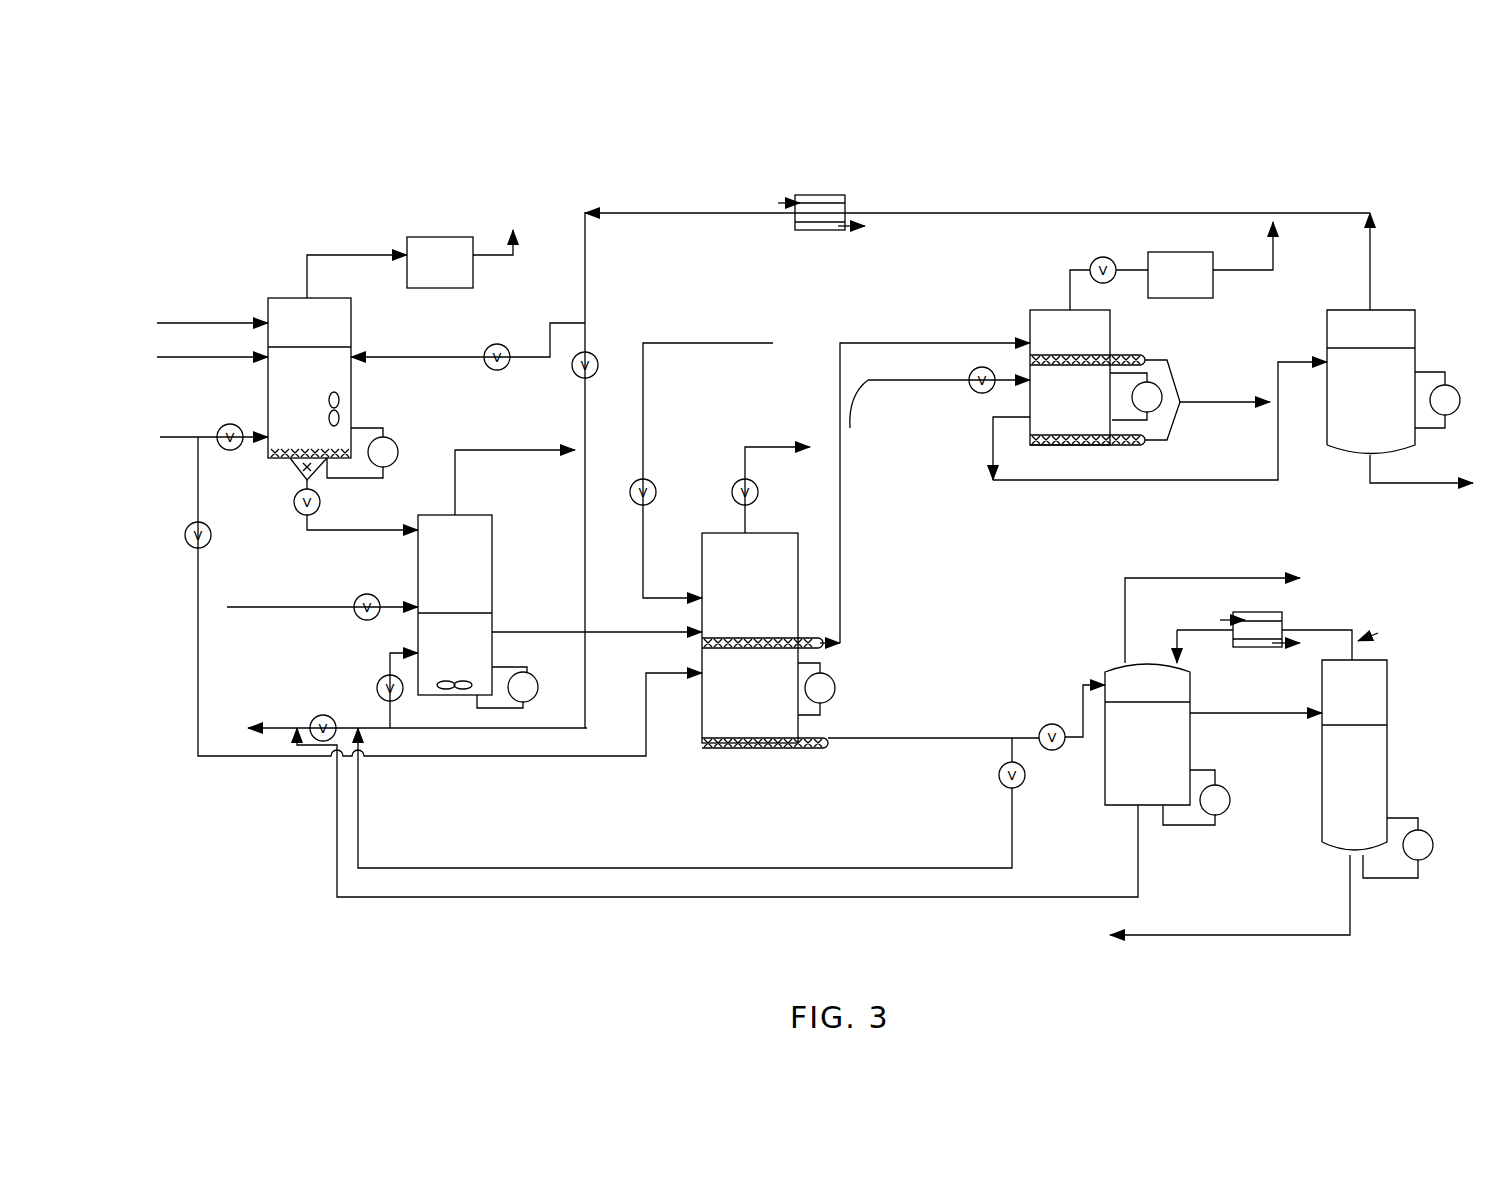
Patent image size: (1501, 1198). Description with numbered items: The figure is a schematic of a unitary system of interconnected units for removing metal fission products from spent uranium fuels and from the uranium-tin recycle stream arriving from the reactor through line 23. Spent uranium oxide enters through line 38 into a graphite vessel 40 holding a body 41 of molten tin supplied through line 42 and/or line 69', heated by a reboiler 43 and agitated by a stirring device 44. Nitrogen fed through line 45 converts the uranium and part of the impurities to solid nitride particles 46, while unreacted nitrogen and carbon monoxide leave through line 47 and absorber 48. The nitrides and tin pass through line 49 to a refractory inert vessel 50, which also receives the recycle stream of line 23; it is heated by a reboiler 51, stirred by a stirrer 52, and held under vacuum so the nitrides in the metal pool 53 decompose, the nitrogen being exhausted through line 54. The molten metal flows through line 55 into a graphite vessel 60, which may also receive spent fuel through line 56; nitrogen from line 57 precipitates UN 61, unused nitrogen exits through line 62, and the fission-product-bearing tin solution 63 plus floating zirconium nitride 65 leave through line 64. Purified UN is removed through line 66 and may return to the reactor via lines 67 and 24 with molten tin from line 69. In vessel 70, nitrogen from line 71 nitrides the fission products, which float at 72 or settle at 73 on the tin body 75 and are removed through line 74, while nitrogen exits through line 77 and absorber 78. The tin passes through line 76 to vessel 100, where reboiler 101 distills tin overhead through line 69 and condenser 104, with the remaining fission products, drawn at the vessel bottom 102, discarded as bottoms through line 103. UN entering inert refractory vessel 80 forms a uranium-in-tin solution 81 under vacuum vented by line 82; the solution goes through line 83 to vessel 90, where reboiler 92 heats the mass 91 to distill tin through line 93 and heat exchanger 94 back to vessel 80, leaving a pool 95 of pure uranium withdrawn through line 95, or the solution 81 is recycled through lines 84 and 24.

The line 23 is at (340, 613).
The line 24 is at (300, 726).
The line 38 is at (182, 324).
The graphite vessel 40 is at (351, 328).
The body of molten tin 41 is at (320, 383).
The line 42 is at (237, 360).
The reboiler 43 is at (398, 442).
The stirring device 44 is at (340, 409).
The line 45 is at (185, 435).
The solid nitride particles 46 is at (292, 462).
The line 47 is at (322, 255).
The absorber 48 is at (425, 237).
The line 49 is at (302, 483).
The refractory inert vessel 50 is at (492, 522).
The reboiler 51 is at (538, 690).
The stirrer 52 is at (440, 692).
The metal pool 53 is at (432, 640).
The line 54 is at (455, 478).
The line 55 is at (655, 630).
The line 56 is at (645, 442).
The line 57 is at (200, 665).
The graphite vessel 60 is at (702, 567).
The precipitated UN 61 is at (758, 748).
The line 62 is at (775, 447).
The molten tin solution 63 is at (765, 665).
The line 64 is at (842, 493).
The solid zirconium nitride 65 is at (800, 638).
The line 66 is at (848, 736).
The line 67 is at (1013, 850).
The line 69 is at (884, 460).
The line 69' is at (468, 342).
The vessel 70 is at (1035, 312).
The line 71 is at (940, 398).
The floating nitrides 72 is at (1112, 360).
The settled nitrides 73 is at (1100, 447).
The line 74 is at (1222, 392).
The molten tin body 75 is at (1047, 398).
The line 76 is at (1073, 482).
The line 77 is at (1070, 270).
The absorber 78 is at (1190, 252).
The inert refractory vessel 80 is at (1105, 676).
The uranium-in-tin solution 81 is at (1170, 745).
The line 82 is at (1125, 595).
The line 83 is at (1260, 716).
The line 84 is at (1000, 899).
The inert refractory vessel 90 is at (1387, 688).
The mass of molten metal 91 is at (1368, 760).
The reboiler 92 is at (1435, 846).
The line 93 is at (1345, 628).
The heat exchanger 94 is at (1277, 612).
The pool of pure uranium 95 is at (1305, 937).
The vessel 100 is at (1418, 312).
The reboiler 101 is at (1458, 392).
The fission product outlet line 102 is at (1352, 455).
The line 103 is at (1440, 490).
The condenser 104 is at (800, 232).